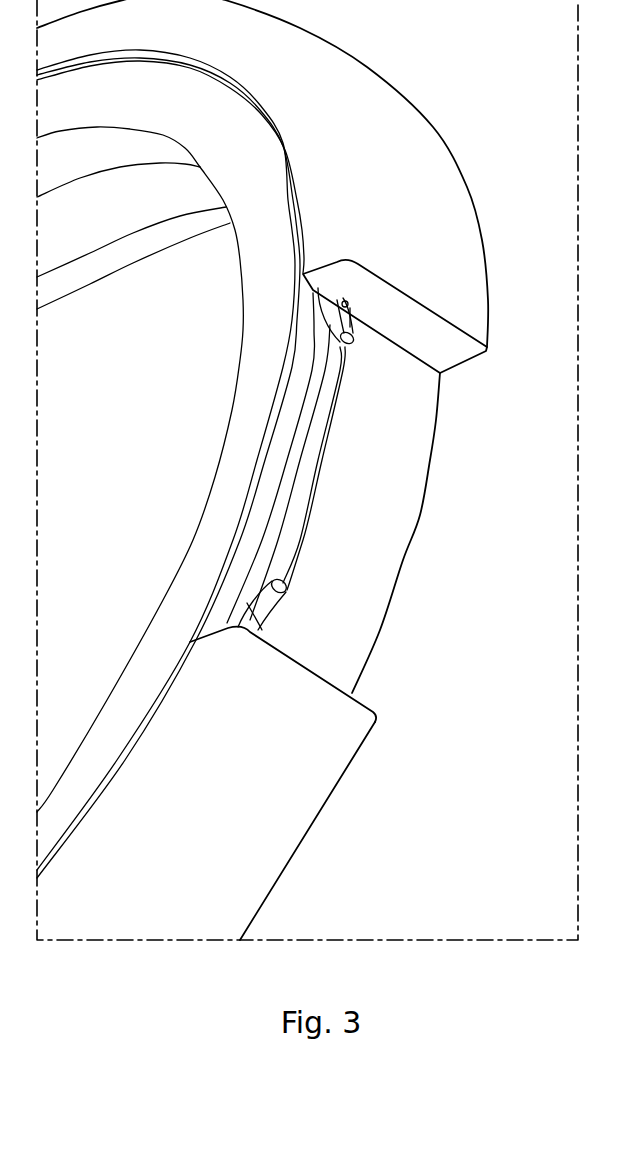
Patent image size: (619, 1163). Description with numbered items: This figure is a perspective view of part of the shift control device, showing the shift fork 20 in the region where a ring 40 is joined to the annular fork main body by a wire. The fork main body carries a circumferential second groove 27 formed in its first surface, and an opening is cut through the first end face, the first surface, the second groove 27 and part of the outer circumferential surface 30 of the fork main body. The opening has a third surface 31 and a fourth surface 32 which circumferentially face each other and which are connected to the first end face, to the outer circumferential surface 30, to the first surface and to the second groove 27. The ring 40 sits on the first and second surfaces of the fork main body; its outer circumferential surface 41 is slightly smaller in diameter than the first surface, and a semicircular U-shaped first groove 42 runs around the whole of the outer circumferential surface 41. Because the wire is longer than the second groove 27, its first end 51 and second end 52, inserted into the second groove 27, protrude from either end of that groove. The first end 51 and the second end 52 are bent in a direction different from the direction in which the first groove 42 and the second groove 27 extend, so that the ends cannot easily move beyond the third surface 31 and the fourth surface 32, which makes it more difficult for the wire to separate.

The shift fork 20 is at (467, 90).
The second groove 27 is at (353, 307).
The outer circumferential surface 30 is at (278, 822).
The third surface 31 is at (323, 673).
The fourth surface 32 is at (453, 350).
The ring 40 is at (232, 473).
The outer circumferential surface 41 is at (242, 537).
The first groove 42 is at (305, 423).
The first end 51 is at (337, 322).
The second end 52 is at (270, 611).